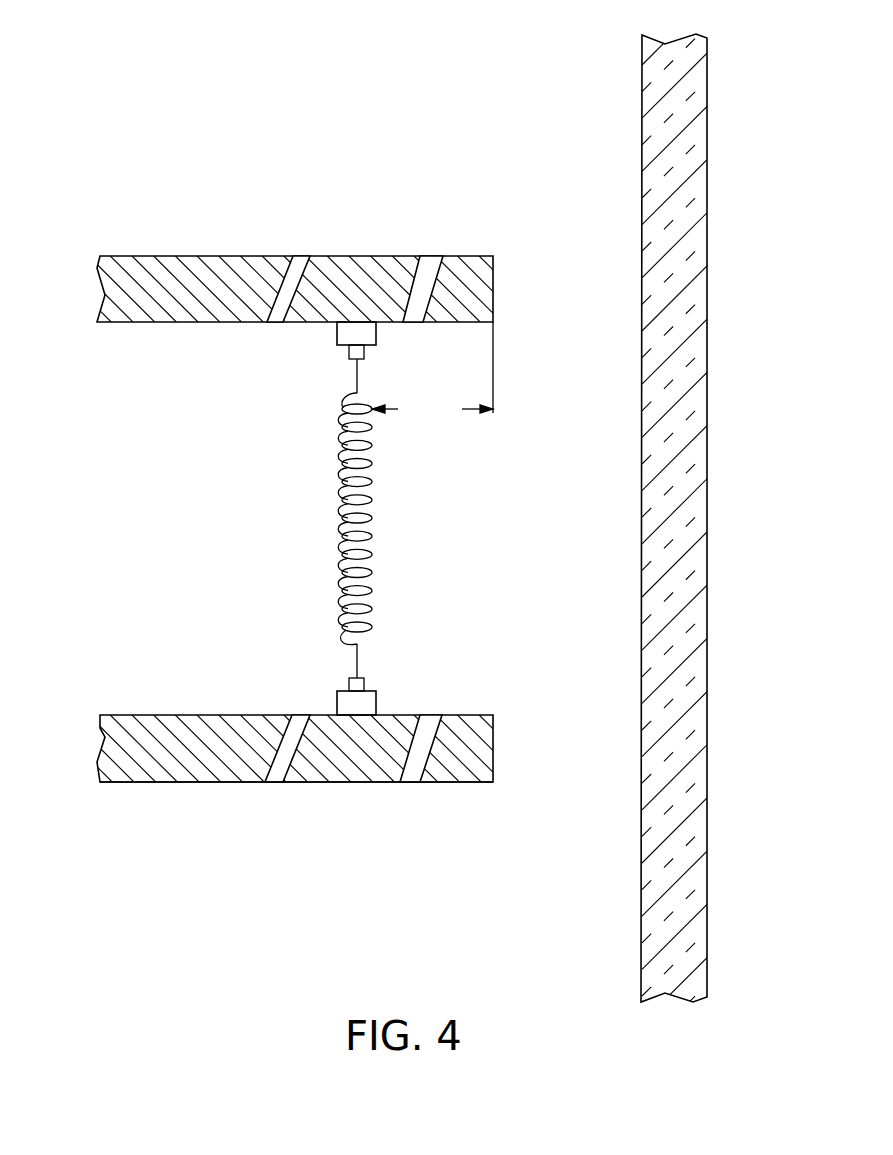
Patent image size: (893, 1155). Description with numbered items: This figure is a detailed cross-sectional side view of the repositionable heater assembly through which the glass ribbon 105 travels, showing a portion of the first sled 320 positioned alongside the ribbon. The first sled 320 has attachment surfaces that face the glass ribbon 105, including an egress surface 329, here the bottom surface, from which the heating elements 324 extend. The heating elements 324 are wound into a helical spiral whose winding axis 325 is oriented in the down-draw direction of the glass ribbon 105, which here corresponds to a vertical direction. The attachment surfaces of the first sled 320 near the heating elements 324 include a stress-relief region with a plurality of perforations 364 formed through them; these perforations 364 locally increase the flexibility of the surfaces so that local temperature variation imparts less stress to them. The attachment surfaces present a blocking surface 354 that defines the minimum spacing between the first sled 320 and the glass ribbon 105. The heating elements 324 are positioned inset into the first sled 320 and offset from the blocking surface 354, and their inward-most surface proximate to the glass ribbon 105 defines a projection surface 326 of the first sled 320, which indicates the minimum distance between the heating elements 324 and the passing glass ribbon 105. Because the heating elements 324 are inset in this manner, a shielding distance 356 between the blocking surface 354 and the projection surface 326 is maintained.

The first sled 320 is at (103, 94).
The glass ribbon 105 is at (700, 153).
The blocking surface 354 is at (493, 297).
The perforations 364 is at (302, 262).
The egress surface 329 is at (443, 782).
The heating elements 324 is at (340, 420).
The winding axis 325 is at (365, 548).
The projection surface 326 is at (372, 492).
The shielding distance 356 is at (432, 374).